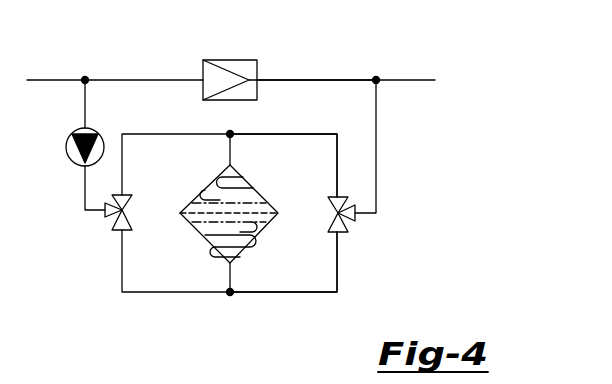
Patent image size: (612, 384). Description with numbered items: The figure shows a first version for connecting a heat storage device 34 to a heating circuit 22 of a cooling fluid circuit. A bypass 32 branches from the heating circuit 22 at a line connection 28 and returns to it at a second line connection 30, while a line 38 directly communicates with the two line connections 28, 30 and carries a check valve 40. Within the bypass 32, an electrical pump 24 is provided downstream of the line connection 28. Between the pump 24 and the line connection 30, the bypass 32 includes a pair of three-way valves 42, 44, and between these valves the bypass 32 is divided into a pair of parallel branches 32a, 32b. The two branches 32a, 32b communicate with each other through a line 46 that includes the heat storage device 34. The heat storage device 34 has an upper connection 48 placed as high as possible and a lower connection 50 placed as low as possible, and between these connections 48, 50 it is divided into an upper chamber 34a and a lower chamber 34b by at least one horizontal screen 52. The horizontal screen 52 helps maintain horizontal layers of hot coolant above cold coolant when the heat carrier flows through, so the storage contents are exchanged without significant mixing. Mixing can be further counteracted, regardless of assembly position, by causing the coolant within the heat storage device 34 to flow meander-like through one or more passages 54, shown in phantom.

The heating circuit 22 is at (405, 82).
The electrical pump 24 is at (54, 169).
The line connection 28 is at (85, 78).
The line connection 30 is at (376, 78).
The bypass 32 is at (376, 173).
The parallel branch 32a is at (313, 134).
The parallel branch 32b is at (298, 292).
The heat storage device 34 is at (201, 243).
The upper chamber 34a is at (197, 200).
The lower chamber 34b is at (203, 221).
The line 38 is at (287, 80).
The check valve 40 is at (241, 66).
The three-way valve 42 is at (105, 219).
The three-way valve 44 is at (349, 219).
The line 46 is at (232, 270).
The upper connection 48 is at (227, 170).
The lower connection 50 is at (228, 258).
The horizontal screen 52 is at (240, 226).
The passage 54 is at (236, 176).